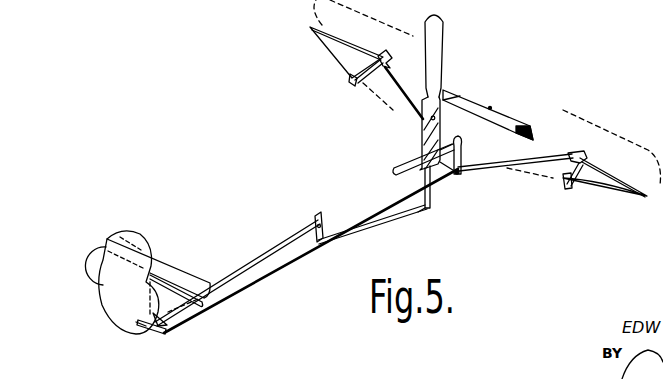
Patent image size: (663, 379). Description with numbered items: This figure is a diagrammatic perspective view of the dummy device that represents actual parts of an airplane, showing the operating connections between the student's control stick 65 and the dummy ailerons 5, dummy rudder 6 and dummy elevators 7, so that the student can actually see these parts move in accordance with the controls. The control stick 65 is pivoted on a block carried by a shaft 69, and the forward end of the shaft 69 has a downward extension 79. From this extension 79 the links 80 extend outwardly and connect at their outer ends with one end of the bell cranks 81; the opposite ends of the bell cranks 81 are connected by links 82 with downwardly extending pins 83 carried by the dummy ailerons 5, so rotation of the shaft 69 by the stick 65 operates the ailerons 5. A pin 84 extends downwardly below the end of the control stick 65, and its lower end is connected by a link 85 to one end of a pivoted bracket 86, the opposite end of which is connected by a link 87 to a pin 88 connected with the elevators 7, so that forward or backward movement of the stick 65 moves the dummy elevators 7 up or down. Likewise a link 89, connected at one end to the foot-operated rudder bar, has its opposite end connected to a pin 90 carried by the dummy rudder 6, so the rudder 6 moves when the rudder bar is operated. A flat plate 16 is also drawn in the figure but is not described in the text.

The dummy aileron 5 is at (340, 53).
The dummy rudder 6 is at (120, 307).
The dummy elevator 7 is at (93, 272).
The plate 16 is at (505, 115).
The control stick 65 is at (435, 57).
The shaft 69 is at (402, 160).
The downward extension 79 is at (462, 153).
The link 80 is at (402, 93).
The bell crank 81 is at (386, 50).
The link 82 is at (365, 66).
The pin 83 is at (352, 79).
The pin 84 is at (430, 198).
The link 85 is at (377, 222).
The pivoted bracket 86 is at (323, 234).
The link 87 is at (260, 255).
The pin 88 is at (145, 327).
The link 89 is at (288, 262).
The pin 90 is at (158, 334).